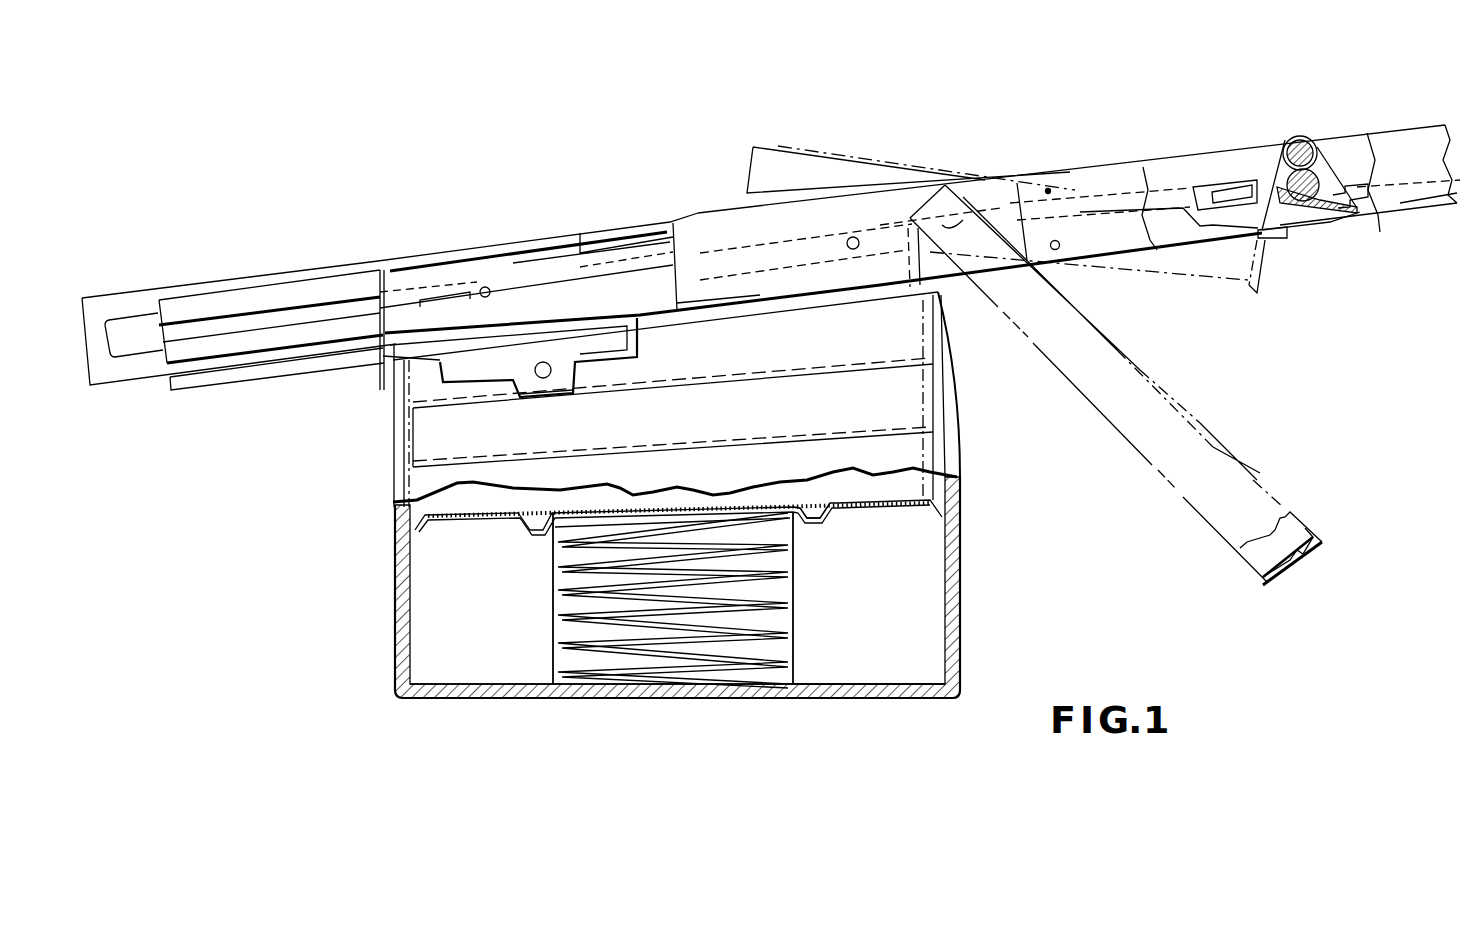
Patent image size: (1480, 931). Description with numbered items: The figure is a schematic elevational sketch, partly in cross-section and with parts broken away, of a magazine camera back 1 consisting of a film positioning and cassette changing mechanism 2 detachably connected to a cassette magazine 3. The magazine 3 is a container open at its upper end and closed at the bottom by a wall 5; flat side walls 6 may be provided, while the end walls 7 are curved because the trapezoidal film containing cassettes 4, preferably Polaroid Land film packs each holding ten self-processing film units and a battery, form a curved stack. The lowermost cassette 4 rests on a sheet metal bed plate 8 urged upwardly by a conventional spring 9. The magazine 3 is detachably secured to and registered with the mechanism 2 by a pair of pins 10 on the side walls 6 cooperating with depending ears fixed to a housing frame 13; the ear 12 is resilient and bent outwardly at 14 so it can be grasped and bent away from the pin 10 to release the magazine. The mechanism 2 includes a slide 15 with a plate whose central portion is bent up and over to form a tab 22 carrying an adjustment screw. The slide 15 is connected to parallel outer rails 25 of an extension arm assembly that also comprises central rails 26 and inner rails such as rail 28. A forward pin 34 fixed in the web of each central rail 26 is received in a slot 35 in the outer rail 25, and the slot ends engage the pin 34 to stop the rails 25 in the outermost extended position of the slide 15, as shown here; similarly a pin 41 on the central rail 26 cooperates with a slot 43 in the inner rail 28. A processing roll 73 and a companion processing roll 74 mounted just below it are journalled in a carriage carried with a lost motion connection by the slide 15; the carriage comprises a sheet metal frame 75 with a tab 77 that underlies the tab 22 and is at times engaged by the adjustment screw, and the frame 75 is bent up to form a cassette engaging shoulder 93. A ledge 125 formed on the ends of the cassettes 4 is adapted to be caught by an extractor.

The magazine camera back 1 is at (345, 405).
The film positioning and cassette changing mechanism 2 is at (232, 394).
The cassette magazine 3 is at (683, 609).
The film containing cassette 4 is at (770, 147).
The bottom wall 5 is at (655, 699).
The side wall 6 is at (871, 676).
The end wall 7 is at (400, 540).
The bed plate 8 is at (816, 513).
The spring 9 is at (553, 601).
The pin 10 is at (553, 371).
The depending ear 12 is at (539, 401).
The housing frame 13 is at (316, 376).
The outwardly bent portion 14 is at (566, 389).
The slide 15 is at (1420, 222).
The tab 22 is at (1358, 183).
The outer rail 25 is at (688, 247).
The central rail 26 is at (386, 282).
The inner rail 28 is at (216, 300).
The forward pin 34 is at (851, 249).
The slot 35 is at (968, 192).
The pin 41 is at (491, 295).
The slot 43 is at (270, 328).
The processing roll 73 is at (1307, 130).
The companion processing roll 74 is at (1324, 172).
The carriage frame 75 is at (1335, 228).
The tab 77 is at (1348, 212).
The cassette engaging shoulder 93 is at (1268, 242).
The ledge 125 is at (1270, 567).